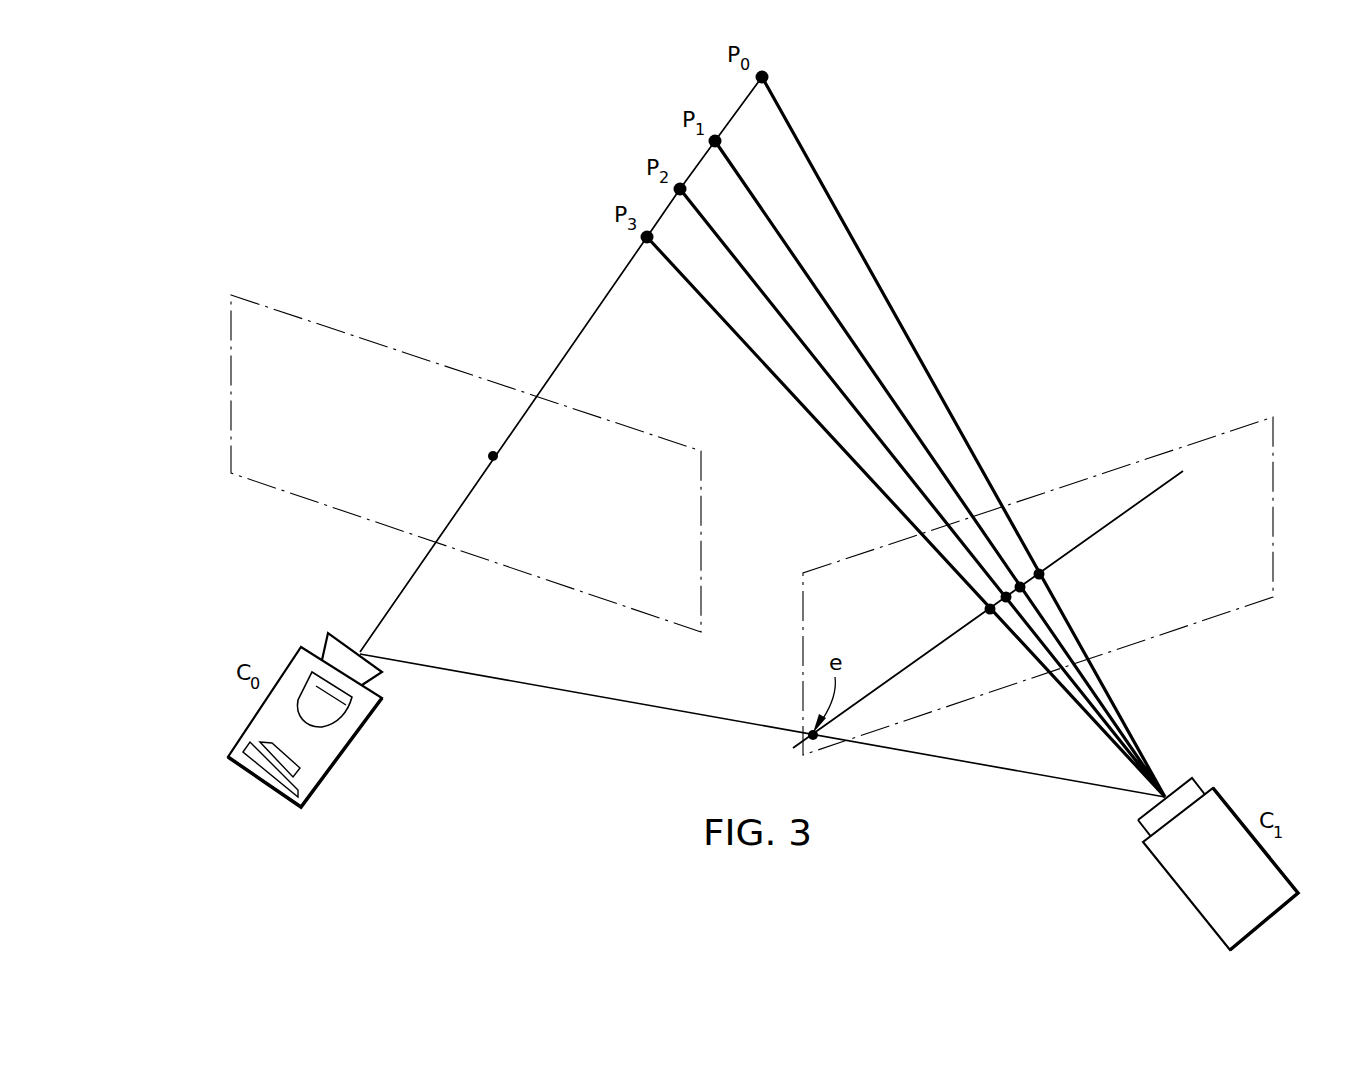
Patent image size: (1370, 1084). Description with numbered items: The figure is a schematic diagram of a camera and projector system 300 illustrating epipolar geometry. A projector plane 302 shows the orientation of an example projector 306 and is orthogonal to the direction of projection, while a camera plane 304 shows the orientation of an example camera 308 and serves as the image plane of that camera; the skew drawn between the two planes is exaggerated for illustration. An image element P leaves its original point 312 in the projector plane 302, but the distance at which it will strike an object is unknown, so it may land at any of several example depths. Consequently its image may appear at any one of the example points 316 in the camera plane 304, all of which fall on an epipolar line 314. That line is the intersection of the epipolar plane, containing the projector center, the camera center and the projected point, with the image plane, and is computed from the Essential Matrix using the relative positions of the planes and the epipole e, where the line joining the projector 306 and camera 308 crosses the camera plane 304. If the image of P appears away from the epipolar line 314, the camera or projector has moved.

The camera and projector system 300 is at (498, 108).
The projector plane 302 is at (230, 387).
The camera plane 304 is at (1273, 508).
The projector 306 is at (255, 780).
The camera 308 is at (1267, 925).
The original point 312 is at (485, 455).
The epipolar line 314 is at (1110, 522).
The example points 316 is at (1023, 578).